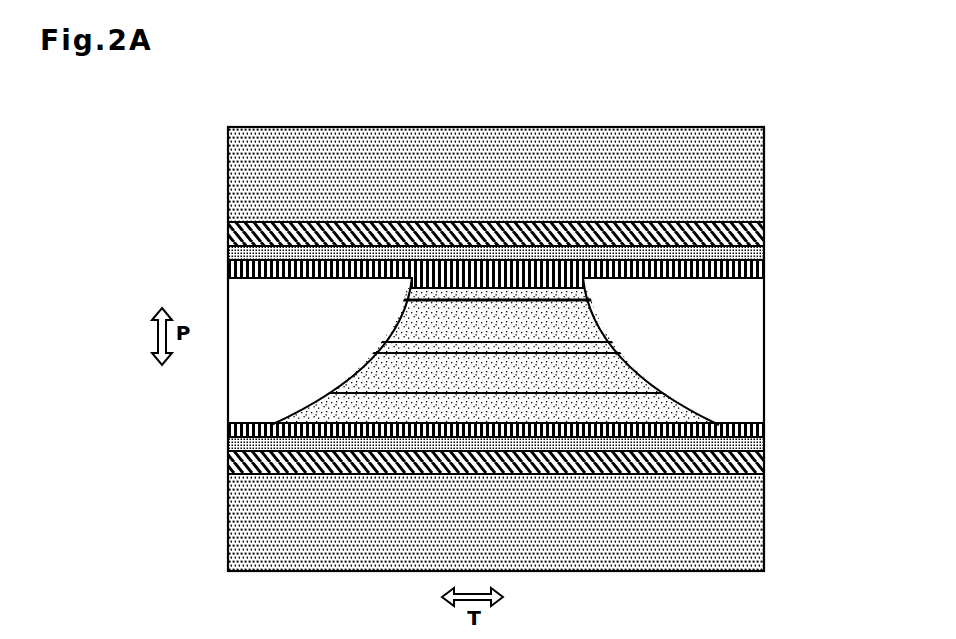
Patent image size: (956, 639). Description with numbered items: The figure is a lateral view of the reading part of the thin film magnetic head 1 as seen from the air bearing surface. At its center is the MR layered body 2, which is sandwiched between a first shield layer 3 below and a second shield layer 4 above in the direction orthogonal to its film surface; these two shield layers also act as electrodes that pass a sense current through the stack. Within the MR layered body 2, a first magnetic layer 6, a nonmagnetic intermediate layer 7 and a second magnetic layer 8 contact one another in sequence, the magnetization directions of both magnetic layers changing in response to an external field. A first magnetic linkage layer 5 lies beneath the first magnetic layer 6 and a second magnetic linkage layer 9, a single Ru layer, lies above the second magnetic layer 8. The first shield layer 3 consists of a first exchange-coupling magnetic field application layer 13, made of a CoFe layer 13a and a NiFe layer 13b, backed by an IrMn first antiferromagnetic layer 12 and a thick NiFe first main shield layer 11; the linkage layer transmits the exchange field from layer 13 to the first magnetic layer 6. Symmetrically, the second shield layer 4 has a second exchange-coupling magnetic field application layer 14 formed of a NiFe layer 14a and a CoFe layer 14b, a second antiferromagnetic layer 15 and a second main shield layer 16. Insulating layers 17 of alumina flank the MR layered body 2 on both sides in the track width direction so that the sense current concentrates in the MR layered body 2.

The thin film magnetic head 1 is at (520, 103).
The MR layered body 2 is at (539, 347).
The first shield layer 3 is at (98, 420).
The second shield layer 4 is at (100, 152).
The first magnetic linkage layer 5 is at (496, 408).
The first magnetic layer 6 is at (496, 373).
The nonmagnetic intermediate layer 7 is at (496, 347).
The second magnetic layer 8 is at (496, 321).
The second magnetic linkage layer 9 is at (496, 294).
The first main shield layer 11 is at (228, 533).
The first antiferromagnetic layer 12 is at (228, 468).
The first exchange-coupling magnetic field application layer 13 is at (141, 418).
The CoFe layer 13a is at (228, 445).
The NiFe layer 13b is at (228, 430).
The second exchange-coupling magnetic field application layer 14 is at (141, 243).
The NiFe layer 14a is at (228, 270).
The CoFe layer 14b is at (228, 253).
The second antiferromagnetic layer 15 is at (228, 236).
The second main shield layer 16 is at (228, 175).
The insulating layers 17 is at (228, 403).